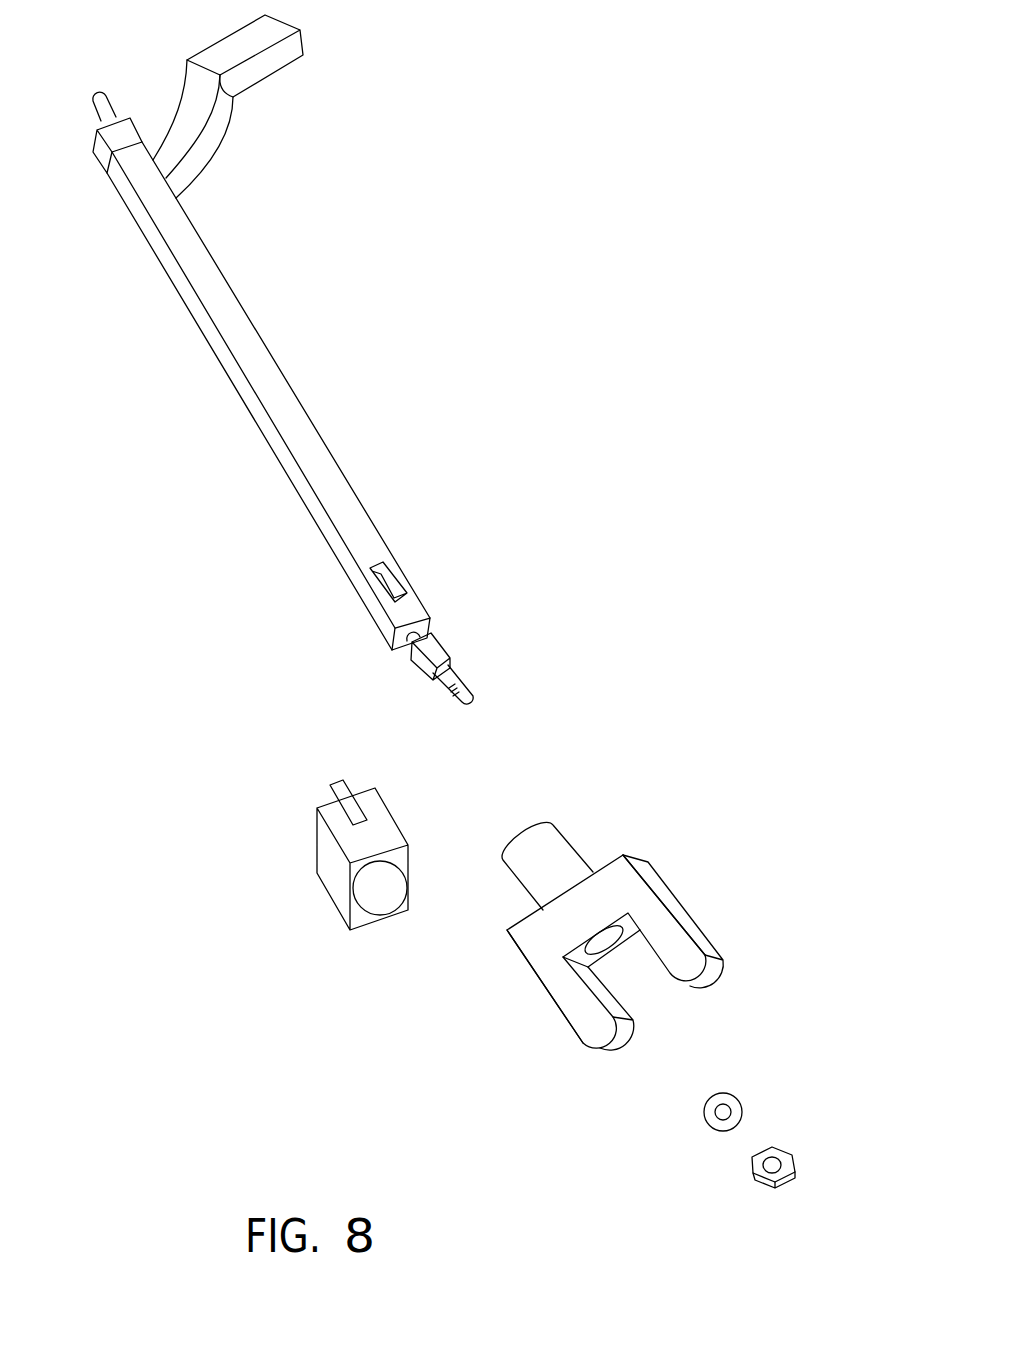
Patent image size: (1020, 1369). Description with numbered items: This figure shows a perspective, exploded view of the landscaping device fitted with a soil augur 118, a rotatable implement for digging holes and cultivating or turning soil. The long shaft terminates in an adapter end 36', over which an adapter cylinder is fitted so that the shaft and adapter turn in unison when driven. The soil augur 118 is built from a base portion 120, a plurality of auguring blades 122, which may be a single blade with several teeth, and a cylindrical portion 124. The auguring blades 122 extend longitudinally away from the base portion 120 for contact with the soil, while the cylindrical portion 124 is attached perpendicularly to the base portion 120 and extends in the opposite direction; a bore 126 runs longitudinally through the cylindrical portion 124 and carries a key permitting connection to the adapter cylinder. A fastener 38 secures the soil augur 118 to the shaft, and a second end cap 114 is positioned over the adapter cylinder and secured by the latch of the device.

The adapter end 36' is at (326, 359).
The second end cap 114 is at (340, 898).
The soil augur 118 is at (642, 930).
The base portion 120 is at (642, 956).
The auguring blades 122 is at (558, 1008).
The cylindrical portion 124 is at (548, 823).
The bore 126 is at (610, 950).
The fastener 38 is at (803, 1143).